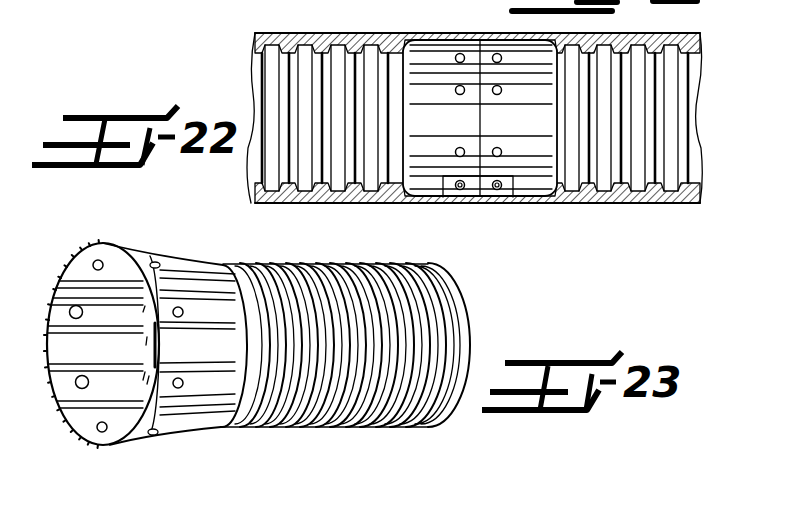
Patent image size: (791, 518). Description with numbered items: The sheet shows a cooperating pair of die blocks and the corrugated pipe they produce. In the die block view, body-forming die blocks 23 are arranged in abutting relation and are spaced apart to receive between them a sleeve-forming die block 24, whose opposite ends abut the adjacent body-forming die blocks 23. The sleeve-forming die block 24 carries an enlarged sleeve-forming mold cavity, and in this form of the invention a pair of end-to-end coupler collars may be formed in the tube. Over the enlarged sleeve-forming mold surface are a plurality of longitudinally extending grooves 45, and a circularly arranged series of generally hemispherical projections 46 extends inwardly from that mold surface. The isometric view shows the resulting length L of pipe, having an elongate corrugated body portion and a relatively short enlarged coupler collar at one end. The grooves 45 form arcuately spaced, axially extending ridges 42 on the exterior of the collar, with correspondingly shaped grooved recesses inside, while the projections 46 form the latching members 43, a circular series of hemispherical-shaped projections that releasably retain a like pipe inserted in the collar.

In FIG. 22, the body-forming die block 23 is at (307, 34).
In FIG. 22, the sleeve-forming die block 24 is at (504, 30).
In FIG. 22, the longitudinally extending grooves 45 is at (445, 180).
In FIG. 22, the hemispherical projections 46 is at (498, 217).
In FIG. 23, the axially extending ridges 42 is at (216, 262).
In FIG. 23, the latching members 43 is at (102, 422).
In FIG. 23, the length of pipe L is at (466, 311).